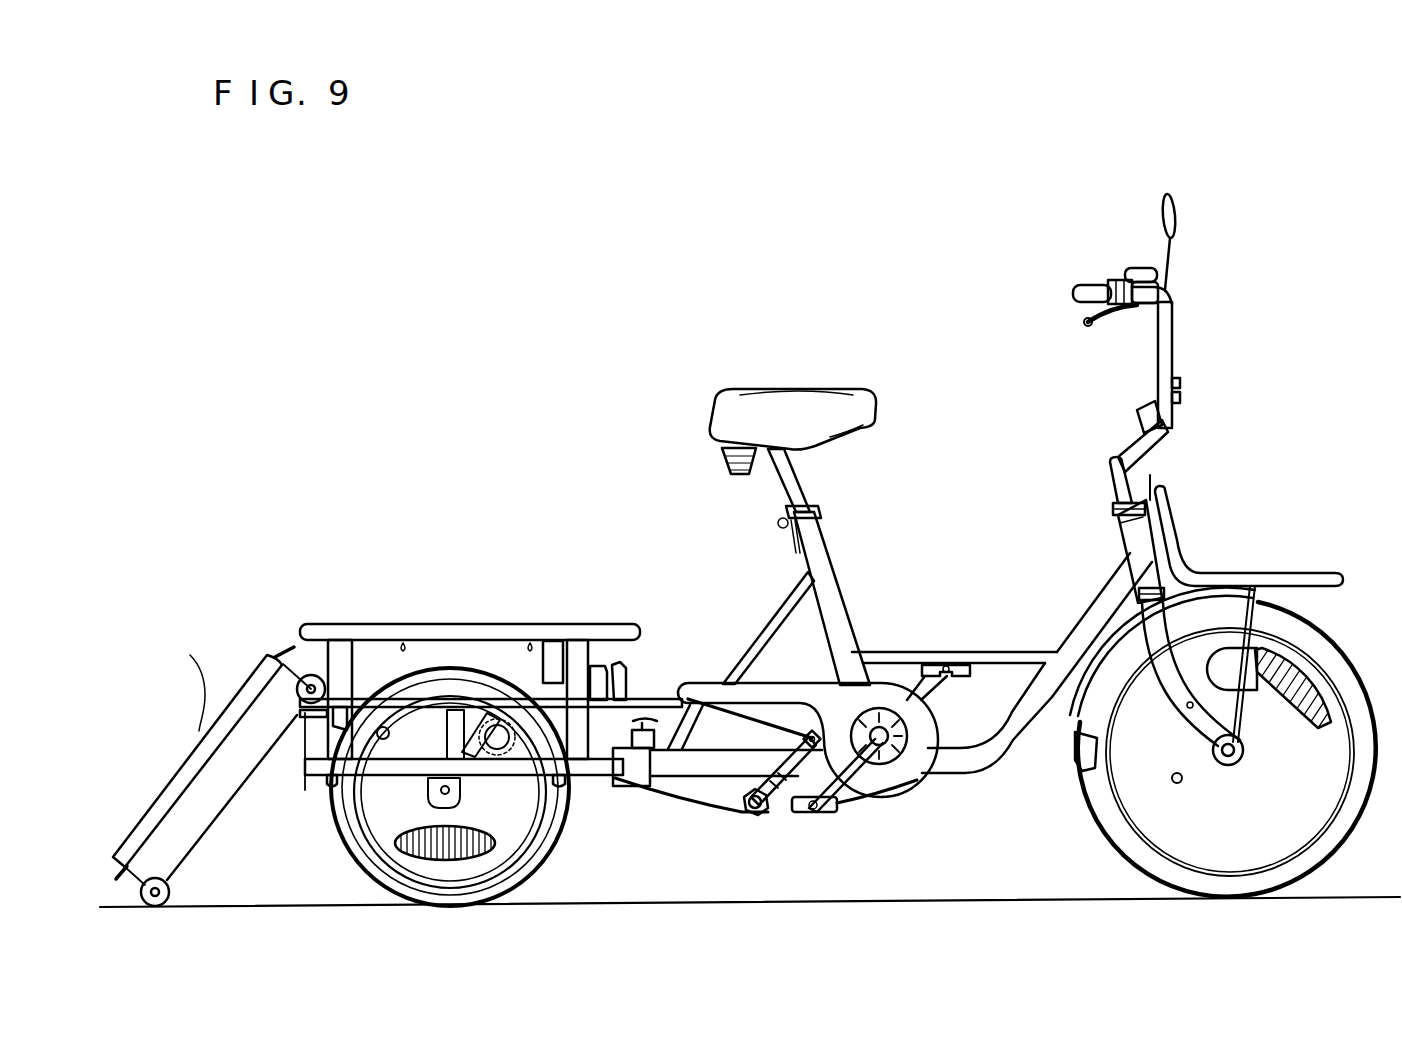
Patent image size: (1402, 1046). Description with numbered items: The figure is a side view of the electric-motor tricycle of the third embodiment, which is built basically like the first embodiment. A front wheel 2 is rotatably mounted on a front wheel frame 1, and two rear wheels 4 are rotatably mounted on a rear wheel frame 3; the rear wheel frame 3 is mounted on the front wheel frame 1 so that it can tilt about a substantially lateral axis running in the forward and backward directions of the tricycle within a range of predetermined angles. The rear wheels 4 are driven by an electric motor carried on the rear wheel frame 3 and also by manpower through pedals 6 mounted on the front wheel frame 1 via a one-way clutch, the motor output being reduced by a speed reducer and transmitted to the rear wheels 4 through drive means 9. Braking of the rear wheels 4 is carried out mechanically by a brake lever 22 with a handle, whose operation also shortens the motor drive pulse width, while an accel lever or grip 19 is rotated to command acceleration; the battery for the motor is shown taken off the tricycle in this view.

The front wheel frame 1 is at (859, 566).
The front wheel 2 is at (1320, 627).
The rear wheel frame 3 is at (483, 610).
The rear wheel 4 is at (545, 855).
The pedals 6 is at (967, 678).
The drive means 9 is at (776, 824).
The accel lever or grip 19 is at (1087, 281).
The brake lever 22 is at (1103, 324).